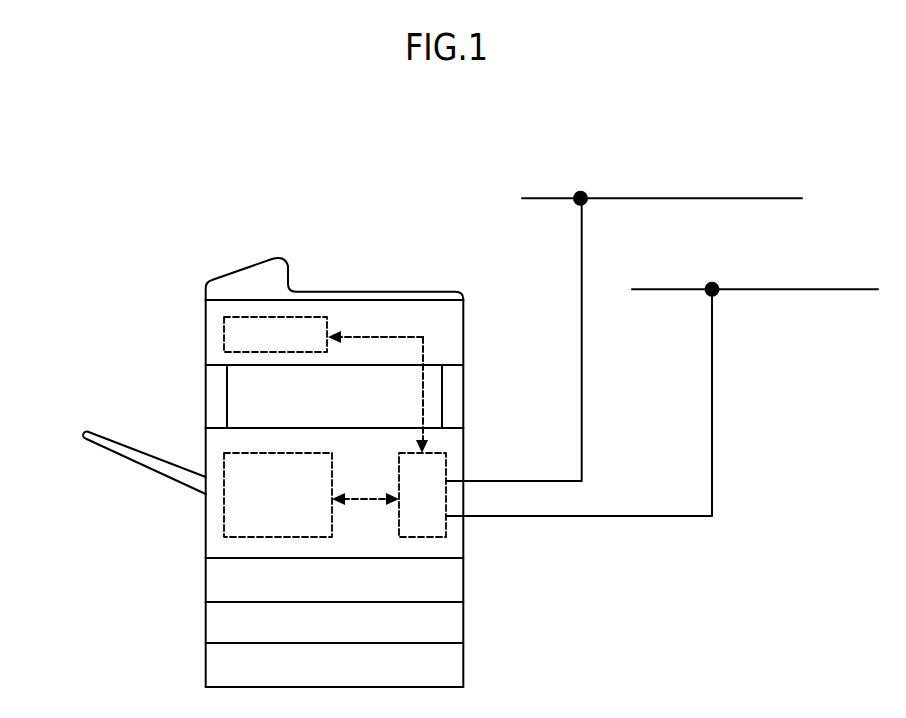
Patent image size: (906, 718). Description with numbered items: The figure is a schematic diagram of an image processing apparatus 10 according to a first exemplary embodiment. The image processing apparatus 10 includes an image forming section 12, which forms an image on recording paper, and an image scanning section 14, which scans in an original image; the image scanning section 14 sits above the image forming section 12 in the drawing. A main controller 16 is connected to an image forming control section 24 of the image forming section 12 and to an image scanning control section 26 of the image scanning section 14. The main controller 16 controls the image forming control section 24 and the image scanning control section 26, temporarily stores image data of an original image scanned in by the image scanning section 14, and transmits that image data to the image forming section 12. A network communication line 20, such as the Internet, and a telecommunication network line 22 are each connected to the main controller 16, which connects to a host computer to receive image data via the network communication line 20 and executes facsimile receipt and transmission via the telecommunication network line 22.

The image processing apparatus 10 is at (217, 237).
The image forming section 12 is at (60, 432).
The image scanning section 14 is at (66, 239).
The main controller 16 is at (433, 537).
The network communication line 20 is at (578, 238).
The telecommunication network line 22 is at (713, 327).
The image forming control section 24 is at (232, 538).
The image scanning control section 26 is at (223, 342).